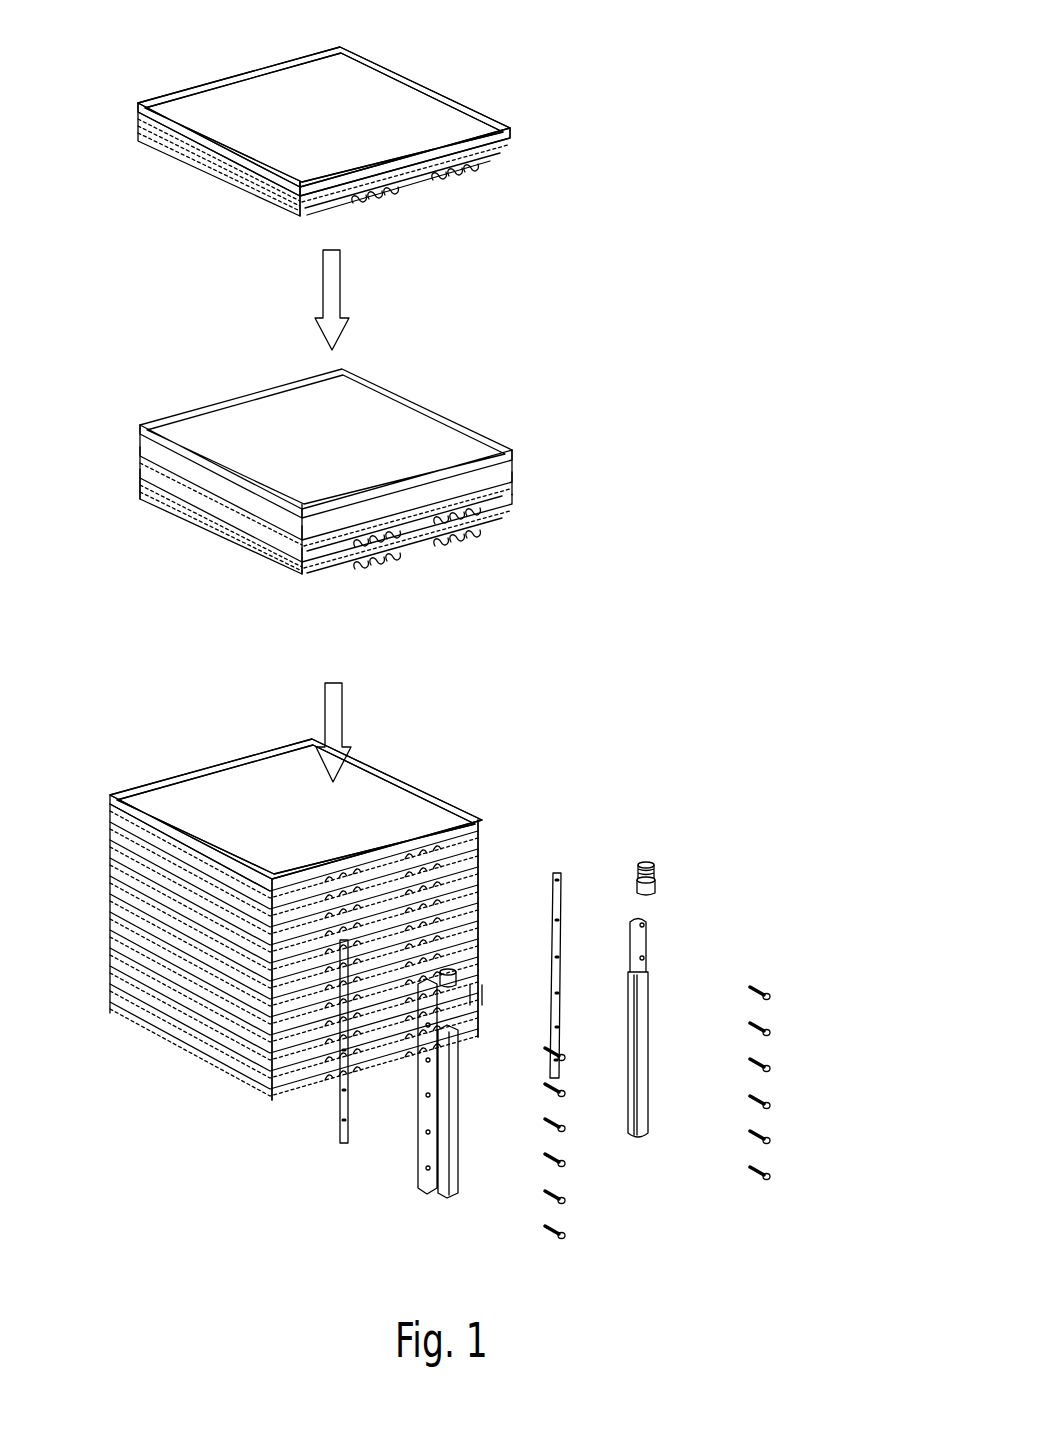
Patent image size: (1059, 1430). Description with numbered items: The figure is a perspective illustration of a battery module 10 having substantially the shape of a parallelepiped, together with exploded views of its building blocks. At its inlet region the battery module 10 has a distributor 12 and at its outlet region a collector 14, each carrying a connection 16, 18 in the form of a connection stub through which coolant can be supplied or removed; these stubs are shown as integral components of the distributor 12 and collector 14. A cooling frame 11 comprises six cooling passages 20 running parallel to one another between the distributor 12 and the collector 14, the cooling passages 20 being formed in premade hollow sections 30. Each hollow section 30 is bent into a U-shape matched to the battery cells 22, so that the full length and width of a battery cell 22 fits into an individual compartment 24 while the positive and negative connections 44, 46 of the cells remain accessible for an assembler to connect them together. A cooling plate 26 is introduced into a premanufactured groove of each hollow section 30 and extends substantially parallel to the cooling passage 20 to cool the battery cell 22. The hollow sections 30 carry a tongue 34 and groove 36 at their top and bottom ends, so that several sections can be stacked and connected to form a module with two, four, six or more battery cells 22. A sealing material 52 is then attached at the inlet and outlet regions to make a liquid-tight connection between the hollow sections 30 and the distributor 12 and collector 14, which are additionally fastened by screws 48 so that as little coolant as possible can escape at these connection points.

The battery module 10 is at (450, 73).
The cooling frame 11 is at (117, 867).
The distributor 12 is at (440, 1183).
The collector 14 is at (641, 937).
The connection 16 is at (482, 1000).
The connection 18 is at (657, 890).
The cooling passage 20 is at (512, 138).
The battery cell 22 is at (408, 813).
The compartment 24 is at (283, 918).
The cooling plate 26 is at (497, 150).
The hollow section 30 is at (253, 182).
The tongue 34 is at (300, 218).
The groove 36 is at (402, 78).
The positive connection 44 is at (473, 168).
The negative connection 46 is at (378, 197).
The screws 48 is at (563, 1235).
The sealing material 52 is at (562, 893).